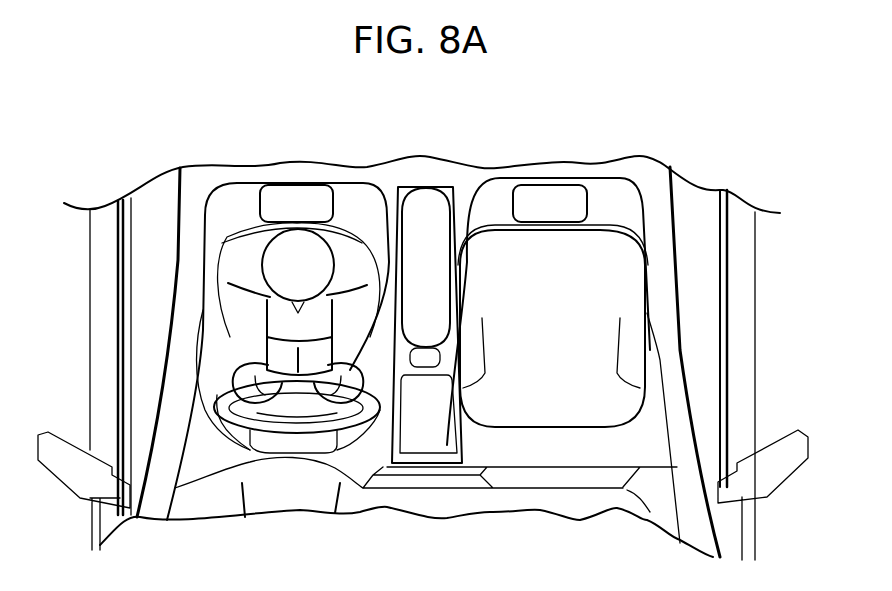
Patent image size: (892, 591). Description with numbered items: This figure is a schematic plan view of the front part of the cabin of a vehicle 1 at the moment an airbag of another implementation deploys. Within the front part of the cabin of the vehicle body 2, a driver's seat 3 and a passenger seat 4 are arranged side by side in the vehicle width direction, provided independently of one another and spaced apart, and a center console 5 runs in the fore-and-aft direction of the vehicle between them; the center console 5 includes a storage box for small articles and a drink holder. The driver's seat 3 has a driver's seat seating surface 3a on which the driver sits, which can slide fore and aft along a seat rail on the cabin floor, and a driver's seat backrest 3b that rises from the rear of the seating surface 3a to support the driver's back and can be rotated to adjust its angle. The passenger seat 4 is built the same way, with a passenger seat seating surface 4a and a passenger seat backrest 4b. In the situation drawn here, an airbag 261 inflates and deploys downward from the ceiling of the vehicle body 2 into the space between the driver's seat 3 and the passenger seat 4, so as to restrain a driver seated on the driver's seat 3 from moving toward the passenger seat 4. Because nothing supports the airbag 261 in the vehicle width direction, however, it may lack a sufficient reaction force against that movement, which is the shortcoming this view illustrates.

The vehicle 1 is at (80, 287).
The vehicle body 2 is at (97, 325).
The driver's seat 3 is at (230, 221).
The driver's seat seating surface 3a is at (220, 359).
The driver's seat backrest 3b is at (248, 200).
The passenger seat 4 is at (618, 220).
The passenger seat seating surface 4a is at (630, 360).
The passenger seat backrest 4b is at (600, 202).
The center console 5 is at (438, 193).
The airbag 261 is at (425, 200).